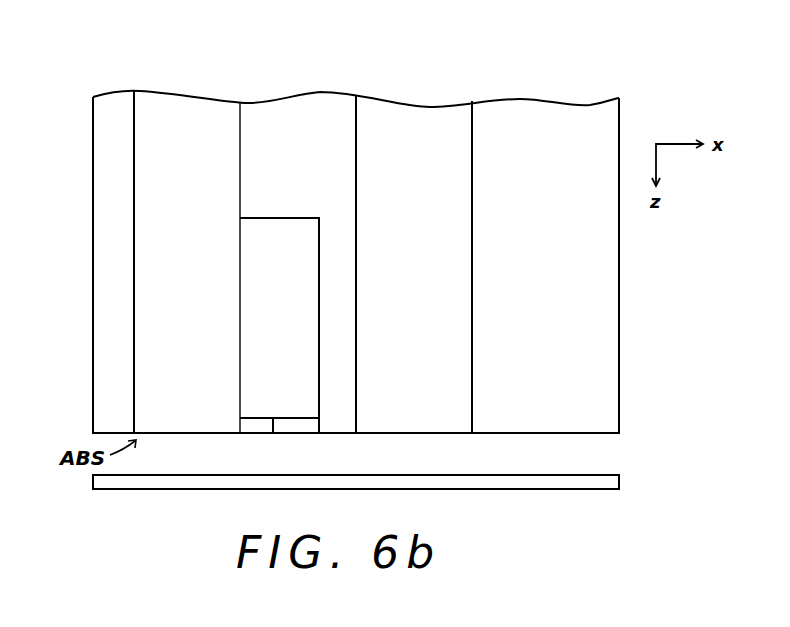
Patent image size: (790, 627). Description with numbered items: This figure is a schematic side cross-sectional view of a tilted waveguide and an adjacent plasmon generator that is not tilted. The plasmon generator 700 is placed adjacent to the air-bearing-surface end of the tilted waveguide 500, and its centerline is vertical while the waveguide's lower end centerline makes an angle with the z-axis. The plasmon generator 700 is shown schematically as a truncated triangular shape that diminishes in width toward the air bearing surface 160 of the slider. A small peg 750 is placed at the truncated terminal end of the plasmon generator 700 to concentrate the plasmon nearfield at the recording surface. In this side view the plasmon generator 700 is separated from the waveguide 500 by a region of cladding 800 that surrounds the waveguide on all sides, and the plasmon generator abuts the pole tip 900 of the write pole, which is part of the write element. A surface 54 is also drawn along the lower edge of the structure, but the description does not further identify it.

The pole tip 900 is at (181, 112).
The plasmon generator 700 is at (292, 236).
The peg 750 is at (288, 428).
The cladding 800 is at (335, 112).
The waveguide 500 is at (425, 145).
The ABS 160 is at (585, 433).
The surface 54 is at (405, 435).